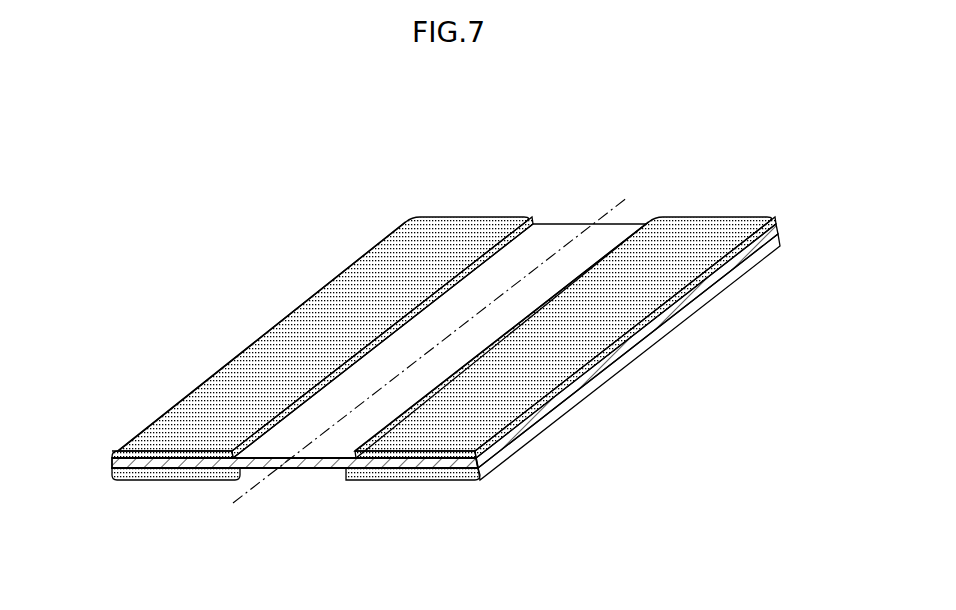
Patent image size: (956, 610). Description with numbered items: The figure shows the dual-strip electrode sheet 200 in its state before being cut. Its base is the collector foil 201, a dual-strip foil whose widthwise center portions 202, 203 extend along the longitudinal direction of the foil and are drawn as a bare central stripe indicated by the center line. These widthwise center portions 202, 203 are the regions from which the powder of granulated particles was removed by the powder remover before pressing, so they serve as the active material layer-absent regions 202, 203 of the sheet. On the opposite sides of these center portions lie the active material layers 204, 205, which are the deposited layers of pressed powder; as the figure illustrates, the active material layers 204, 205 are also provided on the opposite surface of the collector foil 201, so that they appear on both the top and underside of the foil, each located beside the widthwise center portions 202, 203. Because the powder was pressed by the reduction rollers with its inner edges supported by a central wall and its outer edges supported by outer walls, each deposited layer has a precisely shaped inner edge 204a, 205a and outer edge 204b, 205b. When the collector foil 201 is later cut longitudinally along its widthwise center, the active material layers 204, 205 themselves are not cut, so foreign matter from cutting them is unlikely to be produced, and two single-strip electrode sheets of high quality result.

The dual-strip electrode sheet 200 is at (326, 229).
The collector foil 201 is at (322, 470).
The widthwise center portion 202 is at (562, 230).
The widthwise center portion 203 is at (640, 220).
The active material layer 204 is at (440, 228).
The inner edge 204a is at (350, 364).
The outer edge 204b is at (216, 364).
The active material layer 205 is at (723, 225).
The inner edge 205a is at (443, 376).
The outer edge 205b is at (553, 383).